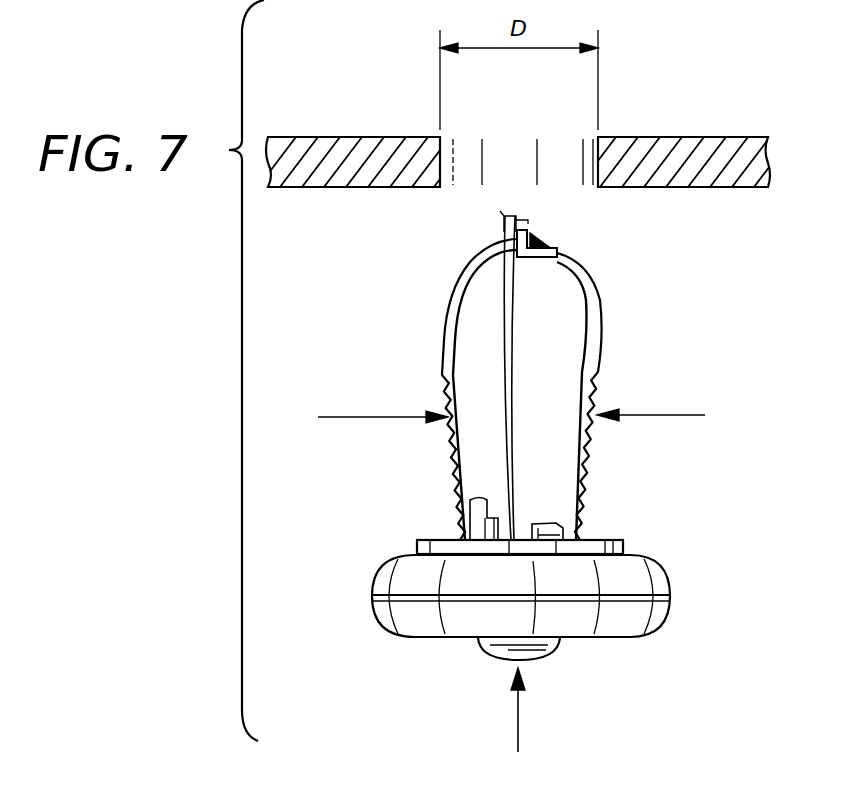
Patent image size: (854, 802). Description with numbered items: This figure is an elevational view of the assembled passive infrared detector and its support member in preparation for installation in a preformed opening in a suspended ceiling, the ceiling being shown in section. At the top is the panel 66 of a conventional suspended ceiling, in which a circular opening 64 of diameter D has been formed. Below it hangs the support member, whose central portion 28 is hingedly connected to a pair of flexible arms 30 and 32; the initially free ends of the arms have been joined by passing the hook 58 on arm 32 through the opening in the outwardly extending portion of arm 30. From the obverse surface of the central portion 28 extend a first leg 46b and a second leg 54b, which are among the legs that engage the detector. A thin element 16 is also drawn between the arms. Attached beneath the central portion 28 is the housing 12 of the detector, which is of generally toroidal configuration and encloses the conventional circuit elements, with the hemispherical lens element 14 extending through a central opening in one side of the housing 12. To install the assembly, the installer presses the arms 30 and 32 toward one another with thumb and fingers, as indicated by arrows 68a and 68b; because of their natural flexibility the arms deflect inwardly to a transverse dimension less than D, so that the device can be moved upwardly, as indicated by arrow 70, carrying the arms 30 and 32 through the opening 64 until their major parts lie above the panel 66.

The housing 12 is at (625, 612).
The hemispherical lens element 14 is at (503, 652).
The filament wire 16 is at (514, 420).
The central portion 28 is at (622, 548).
The arm 30 is at (603, 350).
The arm 32 is at (447, 305).
The first leg 46b is at (470, 500).
The second leg 54b is at (550, 523).
The hook 58 is at (548, 238).
The circular opening 64 is at (478, 155).
The panel 66 is at (697, 162).
The arrow 68a is at (372, 417).
The arrow 68b is at (678, 415).
The arrow 70 is at (518, 718).